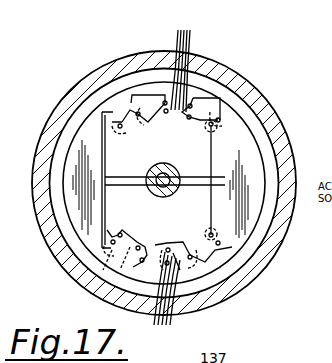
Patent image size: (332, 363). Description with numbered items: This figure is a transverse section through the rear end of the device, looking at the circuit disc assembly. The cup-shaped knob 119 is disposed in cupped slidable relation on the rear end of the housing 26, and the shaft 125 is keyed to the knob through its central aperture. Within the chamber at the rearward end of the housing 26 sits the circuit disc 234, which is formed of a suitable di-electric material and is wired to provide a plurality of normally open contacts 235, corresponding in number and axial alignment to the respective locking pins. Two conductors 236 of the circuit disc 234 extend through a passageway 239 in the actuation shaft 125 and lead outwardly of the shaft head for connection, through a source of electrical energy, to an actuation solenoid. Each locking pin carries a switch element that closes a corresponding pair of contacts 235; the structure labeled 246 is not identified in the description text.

The cup-shaped knob 119 is at (252, 81).
The housing 26 is at (110, 88).
The circuit disc 234 is at (244, 146).
The shaft 125 is at (165, 165).
The conductors 236 is at (187, 178).
The passageway 239 is at (172, 202).
The lever 246 is at (153, 88).
The normally open contacts 235 is at (176, 181).